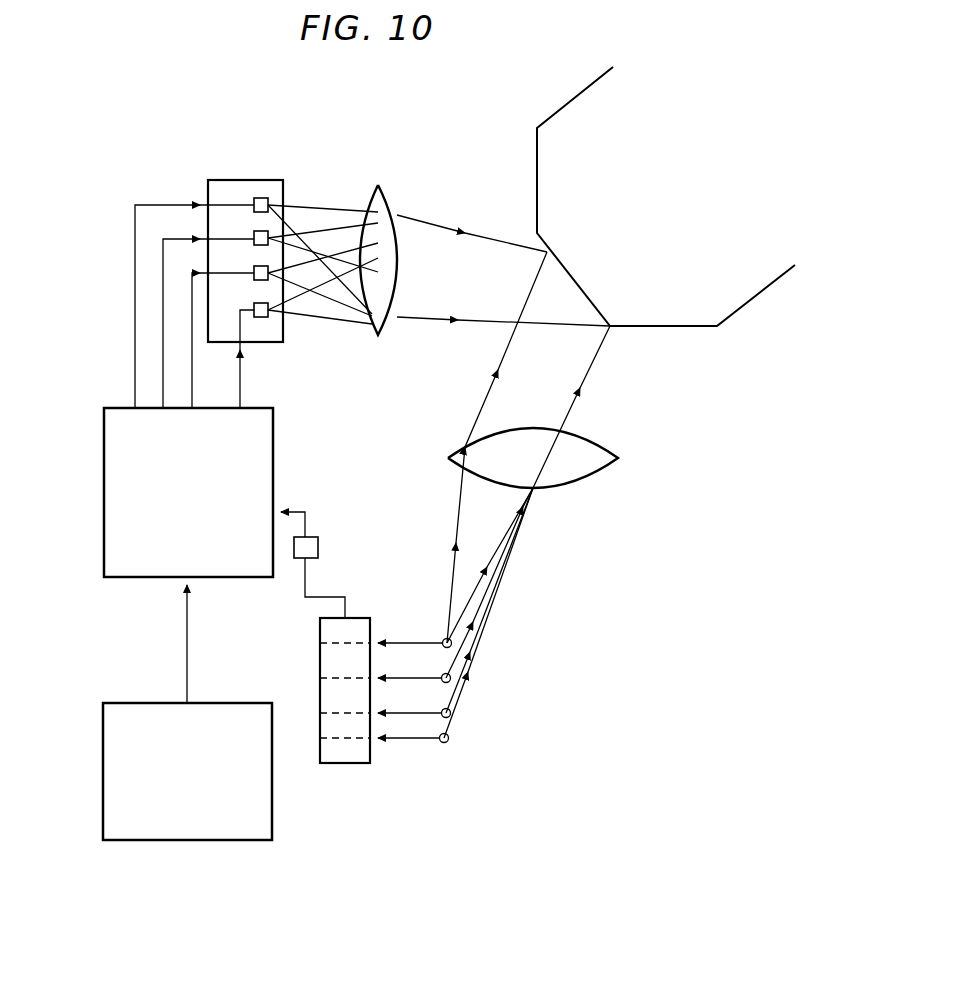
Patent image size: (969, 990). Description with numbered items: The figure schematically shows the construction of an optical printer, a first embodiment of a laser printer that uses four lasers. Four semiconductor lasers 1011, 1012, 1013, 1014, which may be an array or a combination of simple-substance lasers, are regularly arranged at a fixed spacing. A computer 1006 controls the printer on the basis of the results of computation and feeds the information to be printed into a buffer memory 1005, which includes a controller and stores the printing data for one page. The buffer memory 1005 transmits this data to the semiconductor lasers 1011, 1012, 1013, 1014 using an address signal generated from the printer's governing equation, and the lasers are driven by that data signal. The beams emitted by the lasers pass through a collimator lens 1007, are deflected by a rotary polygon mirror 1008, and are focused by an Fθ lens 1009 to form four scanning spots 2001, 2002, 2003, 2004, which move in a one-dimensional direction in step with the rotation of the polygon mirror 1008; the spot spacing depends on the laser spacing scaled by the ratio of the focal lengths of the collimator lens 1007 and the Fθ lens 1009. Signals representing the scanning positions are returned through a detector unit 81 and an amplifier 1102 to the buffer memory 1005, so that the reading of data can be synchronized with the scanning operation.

The buffer memory 1005 is at (275, 443).
The computer 1006 is at (185, 842).
The collimator lens 1007 is at (390, 203).
The rotary polygon mirror 1008 is at (537, 155).
The Fθ lens 1009 is at (585, 437).
The semiconductor laser 1011 is at (260, 198).
The semiconductor laser 1012 is at (254, 238).
The semiconductor laser 1013 is at (254, 272).
The semiconductor laser 1014 is at (254, 310).
The amplifier 1102 is at (318, 545).
The light receiving unit 81 is at (333, 763).
The scanning spot 2001 is at (452, 643).
The scanning spot 2002 is at (450, 678).
The scanning spot 2003 is at (450, 713).
The scanning spot 2004 is at (448, 738).